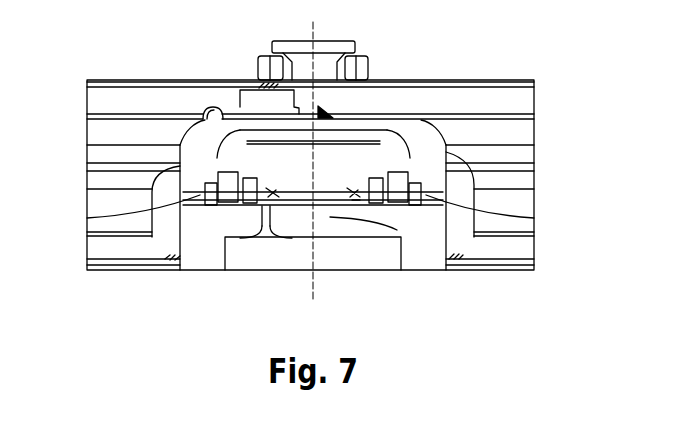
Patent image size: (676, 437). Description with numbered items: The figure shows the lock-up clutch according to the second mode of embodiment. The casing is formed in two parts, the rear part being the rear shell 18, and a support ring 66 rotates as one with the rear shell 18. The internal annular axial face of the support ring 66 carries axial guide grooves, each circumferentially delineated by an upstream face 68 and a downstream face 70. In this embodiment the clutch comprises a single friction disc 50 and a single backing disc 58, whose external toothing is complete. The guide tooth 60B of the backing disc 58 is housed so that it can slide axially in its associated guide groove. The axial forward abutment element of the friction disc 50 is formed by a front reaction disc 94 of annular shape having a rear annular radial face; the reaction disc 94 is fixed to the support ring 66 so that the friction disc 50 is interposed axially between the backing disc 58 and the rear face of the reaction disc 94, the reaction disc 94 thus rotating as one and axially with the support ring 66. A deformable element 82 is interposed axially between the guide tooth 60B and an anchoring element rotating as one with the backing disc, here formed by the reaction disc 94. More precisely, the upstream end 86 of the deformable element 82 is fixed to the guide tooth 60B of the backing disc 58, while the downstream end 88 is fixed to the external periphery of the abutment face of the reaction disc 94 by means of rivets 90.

The rear shell 18 is at (423, 148).
The friction disc 50 is at (313, 262).
The backing disc 58 is at (253, 155).
The guide tooth 60B is at (290, 157).
The support ring 66 is at (87, 218).
The upstream face 68 is at (472, 188).
The downstream face 70 is at (200, 158).
The deformable element 82 is at (334, 235).
The upstream end 86 is at (450, 162).
The downstream end 88 is at (252, 228).
The rivets 90 is at (363, 158).
The reaction disc 94 is at (427, 255).